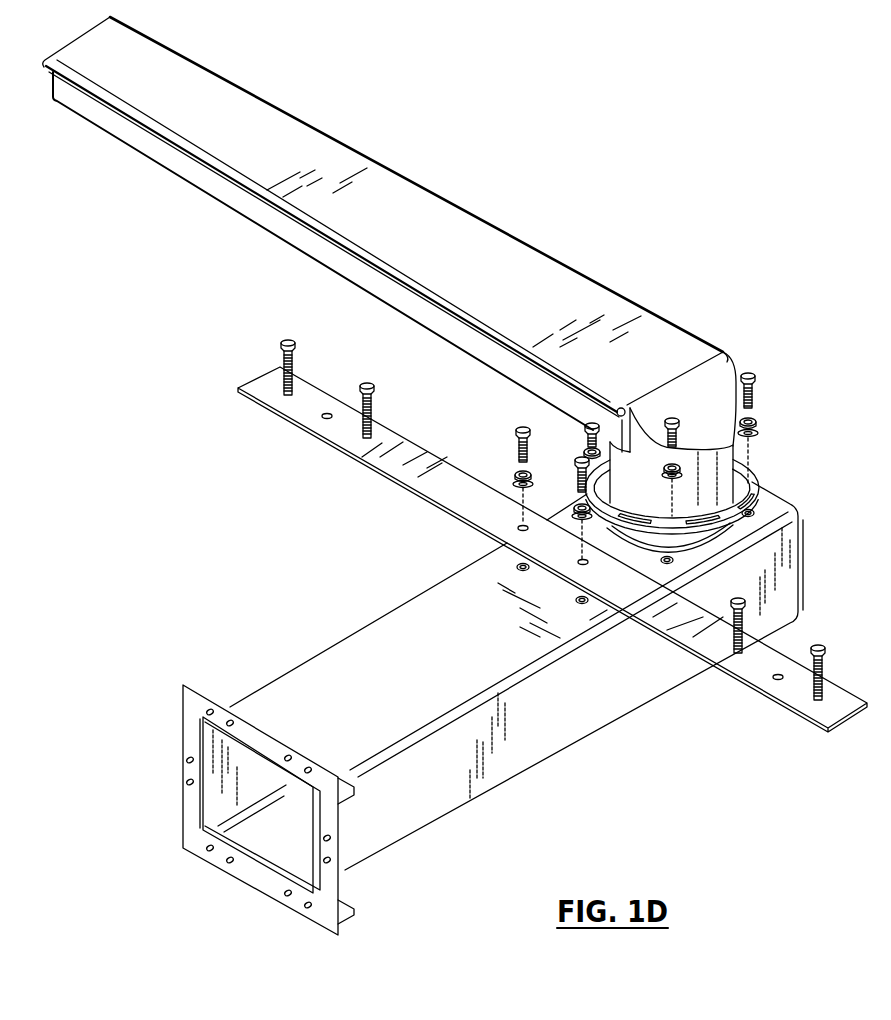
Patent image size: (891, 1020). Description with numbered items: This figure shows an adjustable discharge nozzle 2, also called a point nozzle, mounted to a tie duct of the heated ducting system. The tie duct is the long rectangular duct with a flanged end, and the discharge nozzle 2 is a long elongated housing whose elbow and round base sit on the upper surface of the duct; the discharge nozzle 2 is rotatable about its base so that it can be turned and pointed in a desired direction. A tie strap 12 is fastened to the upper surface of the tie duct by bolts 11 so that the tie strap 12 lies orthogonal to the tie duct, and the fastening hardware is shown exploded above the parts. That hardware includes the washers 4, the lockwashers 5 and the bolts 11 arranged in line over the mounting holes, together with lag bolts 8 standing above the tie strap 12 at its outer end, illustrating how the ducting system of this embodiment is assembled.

The discharge nozzle 2 is at (480, 218).
The washers 4 is at (514, 486).
The lockwashers 5 is at (516, 477).
The lag bolts 8 is at (824, 646).
The bolts 11 is at (518, 450).
The tie strap 12 is at (258, 377).